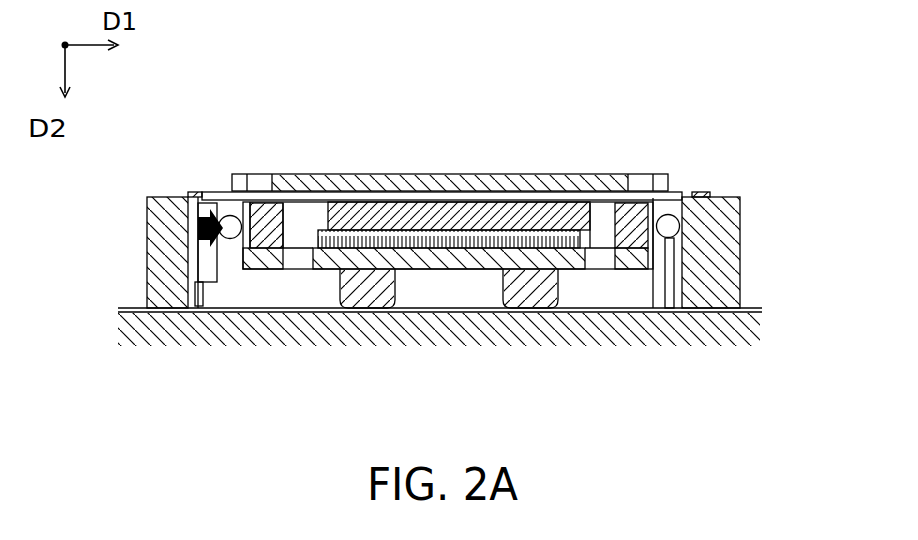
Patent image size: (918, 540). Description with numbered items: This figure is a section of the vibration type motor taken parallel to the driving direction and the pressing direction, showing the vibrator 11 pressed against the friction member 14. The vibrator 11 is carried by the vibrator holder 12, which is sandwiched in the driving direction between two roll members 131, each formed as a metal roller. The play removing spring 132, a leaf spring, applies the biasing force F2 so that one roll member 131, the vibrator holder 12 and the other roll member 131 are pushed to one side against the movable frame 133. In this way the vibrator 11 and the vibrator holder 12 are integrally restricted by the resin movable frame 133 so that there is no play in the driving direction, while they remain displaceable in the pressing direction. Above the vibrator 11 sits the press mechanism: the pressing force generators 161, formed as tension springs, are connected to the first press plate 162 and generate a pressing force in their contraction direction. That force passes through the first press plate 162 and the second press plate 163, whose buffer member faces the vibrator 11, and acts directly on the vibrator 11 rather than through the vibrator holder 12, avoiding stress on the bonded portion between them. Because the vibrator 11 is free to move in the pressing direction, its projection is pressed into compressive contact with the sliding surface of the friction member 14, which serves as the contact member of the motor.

The vibrator 11 is at (447, 252).
The vibrator holder 12 is at (630, 210).
The friction member 14 is at (722, 320).
The roll member 131 is at (231, 240).
The play removing spring 132 is at (200, 205).
The movable frame 133 is at (162, 263).
The pressing force generator 161 is at (490, 178).
The first press plate 162 is at (445, 195).
The second press plate 163 is at (363, 200).
The biasing force F2 is at (197, 220).